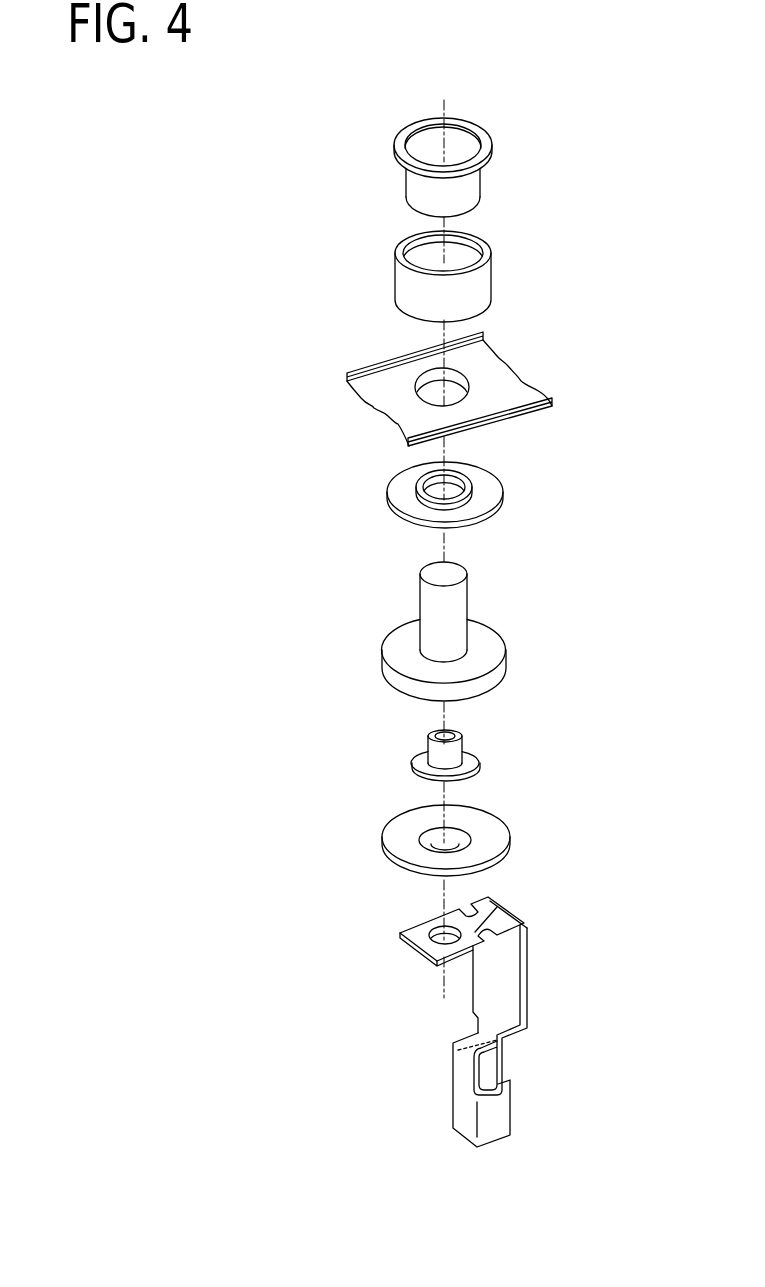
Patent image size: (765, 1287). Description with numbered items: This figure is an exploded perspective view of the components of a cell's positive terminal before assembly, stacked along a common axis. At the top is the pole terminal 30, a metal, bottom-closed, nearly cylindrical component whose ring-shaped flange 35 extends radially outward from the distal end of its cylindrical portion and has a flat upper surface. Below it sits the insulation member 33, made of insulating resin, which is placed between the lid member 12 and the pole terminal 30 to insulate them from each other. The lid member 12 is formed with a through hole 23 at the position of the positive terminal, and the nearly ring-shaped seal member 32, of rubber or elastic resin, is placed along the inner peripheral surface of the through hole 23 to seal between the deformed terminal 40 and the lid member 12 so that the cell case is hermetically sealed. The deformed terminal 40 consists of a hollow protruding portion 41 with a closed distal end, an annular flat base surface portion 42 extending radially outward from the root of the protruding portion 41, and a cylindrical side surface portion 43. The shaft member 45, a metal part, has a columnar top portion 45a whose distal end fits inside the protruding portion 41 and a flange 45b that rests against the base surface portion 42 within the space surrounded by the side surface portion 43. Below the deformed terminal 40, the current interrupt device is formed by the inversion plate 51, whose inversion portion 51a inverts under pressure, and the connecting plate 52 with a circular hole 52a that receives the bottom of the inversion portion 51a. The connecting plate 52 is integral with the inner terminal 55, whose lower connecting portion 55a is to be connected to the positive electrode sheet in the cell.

The lid member 12 is at (477, 379).
The through hole 23 is at (457, 377).
The pole terminal 30 is at (474, 158).
The flange 35 is at (483, 129).
The insulation member 33 is at (485, 283).
The seal member 32 is at (497, 484).
The deformed terminal 40 is at (493, 622).
The protruding portion 41 is at (467, 590).
The base surface portion 42 is at (498, 640).
The side surface portion 43 is at (503, 673).
The shaft member 45 is at (521, 755).
The top portion 45a is at (462, 744).
The flange 45b is at (480, 762).
The inversion plate 51 is at (440, 828).
The inversion portion 51a is at (433, 835).
The connecting plate 52 is at (459, 927).
The circular hole 52a is at (431, 926).
The inner terminal 55 is at (492, 1017).
The connecting portion 55a is at (502, 1110).